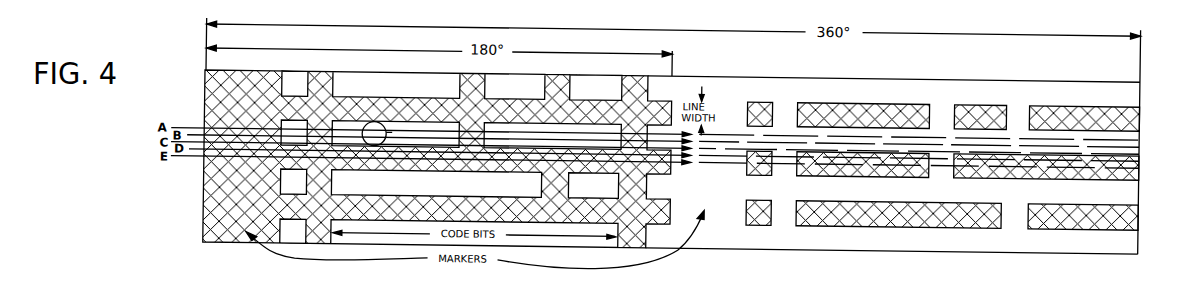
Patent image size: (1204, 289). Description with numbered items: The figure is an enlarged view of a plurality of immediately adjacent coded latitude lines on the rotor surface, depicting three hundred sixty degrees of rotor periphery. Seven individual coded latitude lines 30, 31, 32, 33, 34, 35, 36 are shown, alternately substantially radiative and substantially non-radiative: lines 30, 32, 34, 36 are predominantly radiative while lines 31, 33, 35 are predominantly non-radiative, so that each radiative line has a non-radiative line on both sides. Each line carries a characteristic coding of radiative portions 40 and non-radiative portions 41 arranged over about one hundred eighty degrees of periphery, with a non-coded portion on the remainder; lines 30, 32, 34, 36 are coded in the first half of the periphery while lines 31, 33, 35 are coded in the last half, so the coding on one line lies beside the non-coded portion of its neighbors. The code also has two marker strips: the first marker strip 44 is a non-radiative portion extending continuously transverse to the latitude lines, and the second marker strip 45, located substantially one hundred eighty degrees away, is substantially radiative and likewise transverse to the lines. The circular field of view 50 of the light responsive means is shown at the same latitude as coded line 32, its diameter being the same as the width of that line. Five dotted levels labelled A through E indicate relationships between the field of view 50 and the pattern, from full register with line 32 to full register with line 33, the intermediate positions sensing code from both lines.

The coded latitude line 30 is at (1135, 80).
The coded latitude line 31 is at (1135, 102).
The coded latitude line 32 is at (1135, 127).
The coded latitude line 33 is at (1135, 152).
The coded latitude line 34 is at (1135, 175).
The coded latitude line 35 is at (1135, 200).
The coded latitude line 36 is at (1135, 227).
The radiative portion 40 is at (388, 81).
The non-radiative portion 41 is at (331, 118).
The first marker strip 44 is at (252, 73).
The second marker strip 45 is at (730, 228).
The field of view 50 is at (383, 122).